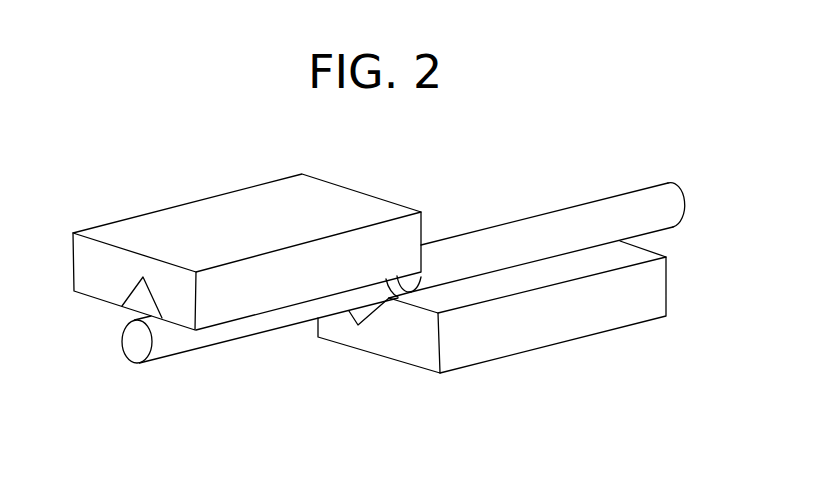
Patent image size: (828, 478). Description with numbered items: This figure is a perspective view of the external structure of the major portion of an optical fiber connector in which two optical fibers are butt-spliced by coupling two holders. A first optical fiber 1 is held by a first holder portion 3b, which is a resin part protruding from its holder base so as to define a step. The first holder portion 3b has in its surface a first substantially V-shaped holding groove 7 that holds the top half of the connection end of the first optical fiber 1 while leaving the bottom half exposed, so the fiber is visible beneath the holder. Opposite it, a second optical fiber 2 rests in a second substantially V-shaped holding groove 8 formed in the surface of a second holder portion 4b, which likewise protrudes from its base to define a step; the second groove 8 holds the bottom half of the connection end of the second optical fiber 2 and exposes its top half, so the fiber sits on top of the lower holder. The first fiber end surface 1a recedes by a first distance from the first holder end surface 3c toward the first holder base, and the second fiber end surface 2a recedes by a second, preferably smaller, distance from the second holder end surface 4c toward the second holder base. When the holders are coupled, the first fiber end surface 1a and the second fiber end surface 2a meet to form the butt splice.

The first optical fiber 1 is at (160, 358).
The first fiber end surface 1a is at (391, 299).
The second optical fiber 2 is at (562, 208).
The second fiber end surface 2a is at (412, 286).
The first holder portion 3b is at (138, 217).
The first holder end surface 3c is at (361, 191).
The second holder portion 4b is at (596, 335).
The second holder end surface 4c is at (408, 352).
The first substantially V-shaped holding groove 7 is at (142, 291).
The second substantially V-shaped holding groove 8 is at (318, 337).